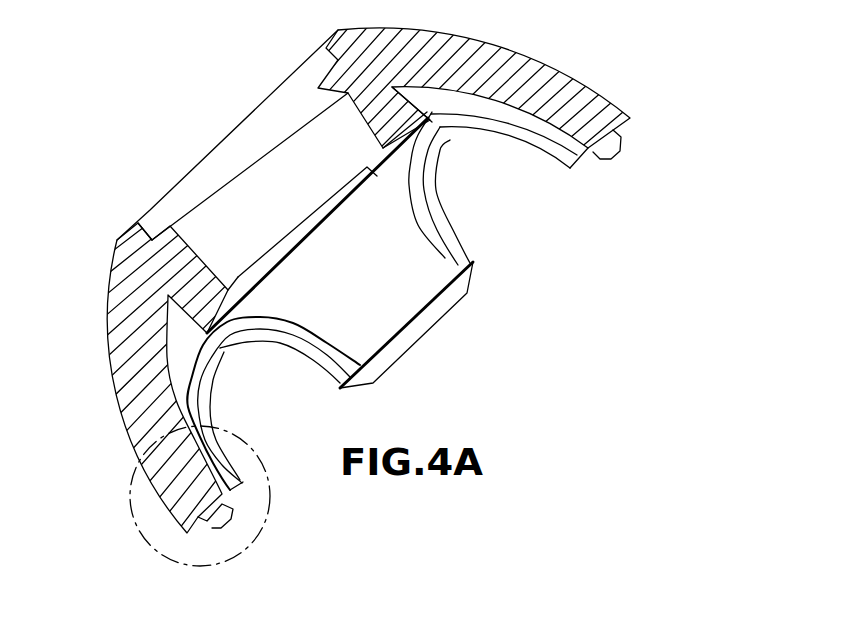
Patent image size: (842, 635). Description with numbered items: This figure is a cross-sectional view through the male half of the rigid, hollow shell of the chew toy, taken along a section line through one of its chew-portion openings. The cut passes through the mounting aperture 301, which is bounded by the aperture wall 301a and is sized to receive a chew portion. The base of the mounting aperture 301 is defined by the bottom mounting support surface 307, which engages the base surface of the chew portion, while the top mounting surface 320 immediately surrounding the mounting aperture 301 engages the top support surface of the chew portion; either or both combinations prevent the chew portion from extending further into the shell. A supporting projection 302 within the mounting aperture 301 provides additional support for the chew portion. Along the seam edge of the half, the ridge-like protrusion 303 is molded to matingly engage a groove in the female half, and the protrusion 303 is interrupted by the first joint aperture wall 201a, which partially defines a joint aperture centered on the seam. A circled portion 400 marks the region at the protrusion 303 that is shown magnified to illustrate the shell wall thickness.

The mounting aperture 301 is at (255, 200).
The aperture wall 301a is at (347, 91).
The bottom mounting support surface 307 is at (222, 265).
The top mounting surface 320 is at (147, 235).
The supporting projection 302 is at (130, 400).
The protrusion 303 is at (620, 147).
The first joint aperture wall 201a is at (445, 258).
The portion 400 is at (158, 567).